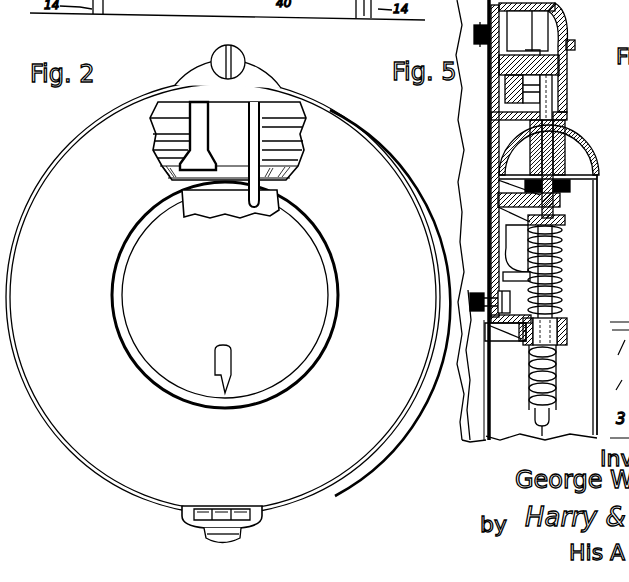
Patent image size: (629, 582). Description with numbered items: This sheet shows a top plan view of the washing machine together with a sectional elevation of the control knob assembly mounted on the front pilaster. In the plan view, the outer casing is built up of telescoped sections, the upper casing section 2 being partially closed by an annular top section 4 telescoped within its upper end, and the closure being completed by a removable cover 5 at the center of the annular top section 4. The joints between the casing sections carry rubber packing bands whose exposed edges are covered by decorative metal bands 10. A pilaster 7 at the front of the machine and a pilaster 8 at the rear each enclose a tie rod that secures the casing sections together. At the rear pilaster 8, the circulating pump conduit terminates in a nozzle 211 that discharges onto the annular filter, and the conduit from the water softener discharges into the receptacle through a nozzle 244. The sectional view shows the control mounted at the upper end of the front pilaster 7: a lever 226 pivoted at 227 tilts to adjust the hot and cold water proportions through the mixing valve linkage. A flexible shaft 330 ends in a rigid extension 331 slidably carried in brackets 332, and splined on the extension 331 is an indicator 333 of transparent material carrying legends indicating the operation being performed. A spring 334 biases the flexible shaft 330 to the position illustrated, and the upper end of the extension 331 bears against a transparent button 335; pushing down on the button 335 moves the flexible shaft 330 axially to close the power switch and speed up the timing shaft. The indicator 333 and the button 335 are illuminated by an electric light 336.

In FIG. 5, the upper casing section 2 is at (483, 378).
In FIG. 2, the annular top section 4 is at (73, 435).
In FIG. 2, the removable cover 5 is at (147, 341).
In FIG. 2, the front pilaster 7 is at (188, 521).
In FIG. 5, the front pilaster 7 is at (597, 218).
In FIG. 2, the rear pilaster 8 is at (190, 63).
In FIG. 2, the decorative metal band 10 is at (368, 118).
In FIG. 2, the nozzle 211 is at (177, 104).
In FIG. 2, the nozzle 244 is at (257, 154).
In FIG. 5, the lever 226 is at (487, 97).
In FIG. 5, the pivot 227 is at (487, 86).
In FIG. 5, the flexible shaft 330 is at (535, 419).
In FIG. 5, the rigid extension 331 is at (553, 90).
In FIG. 5, the brackets 332 is at (487, 162).
In FIG. 5, the indicator 333 is at (578, 138).
In FIG. 5, the spring 334 is at (553, 283).
In FIG. 5, the transparent button 335 is at (562, 32).
In FIG. 5, the electric light 336 is at (513, 238).